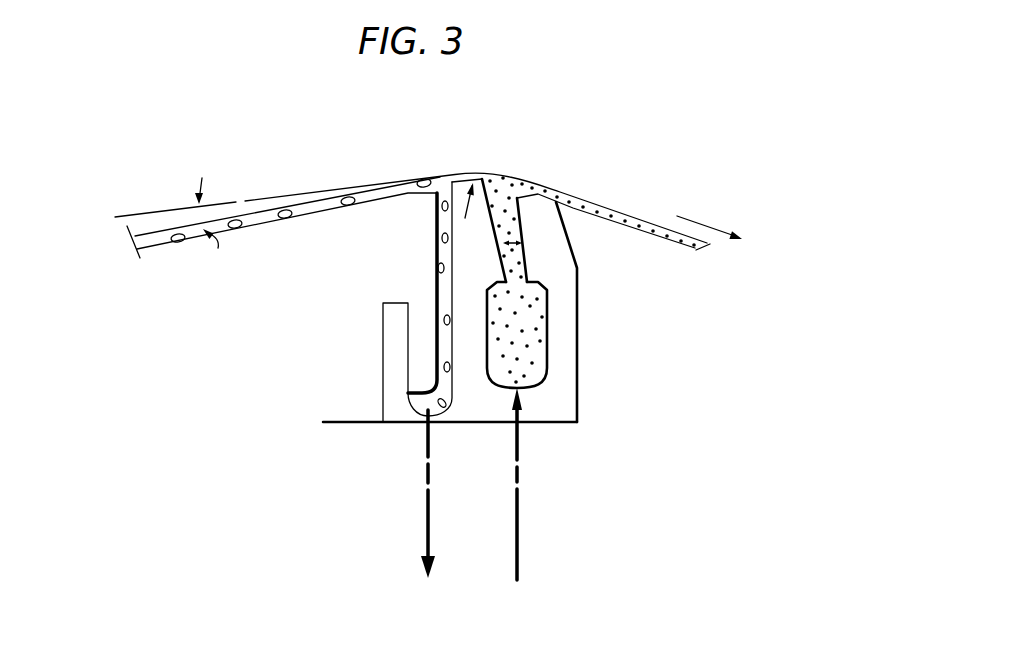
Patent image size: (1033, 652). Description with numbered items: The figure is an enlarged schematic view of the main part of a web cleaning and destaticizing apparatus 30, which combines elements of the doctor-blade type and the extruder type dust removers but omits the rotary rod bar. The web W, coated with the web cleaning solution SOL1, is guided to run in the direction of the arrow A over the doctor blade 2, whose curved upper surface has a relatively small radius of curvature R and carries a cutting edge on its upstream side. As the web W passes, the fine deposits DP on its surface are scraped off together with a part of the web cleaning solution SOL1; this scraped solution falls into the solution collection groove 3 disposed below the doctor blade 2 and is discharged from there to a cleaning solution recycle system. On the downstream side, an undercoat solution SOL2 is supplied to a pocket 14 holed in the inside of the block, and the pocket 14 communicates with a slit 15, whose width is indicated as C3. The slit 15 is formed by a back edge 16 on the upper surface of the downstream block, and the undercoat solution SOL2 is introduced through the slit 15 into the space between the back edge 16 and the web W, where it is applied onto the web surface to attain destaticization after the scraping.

The web cleaning and destaticizing apparatus 30 is at (289, 152).
The doctor blade 2 is at (480, 175).
The radius of curvature R is at (450, 182).
The fine deposits DP is at (287, 220).
The web cleaning solution SOL1 is at (228, 233).
The solution collection groove 3 is at (407, 380).
The slit 15 is at (527, 268).
The passage clearance C3 is at (522, 243).
The pocket 14 is at (548, 350).
The back edge 16 is at (550, 194).
The web W is at (627, 216).
The running direction of the web A is at (711, 205).
The undercoat solution SOL2 is at (668, 240).